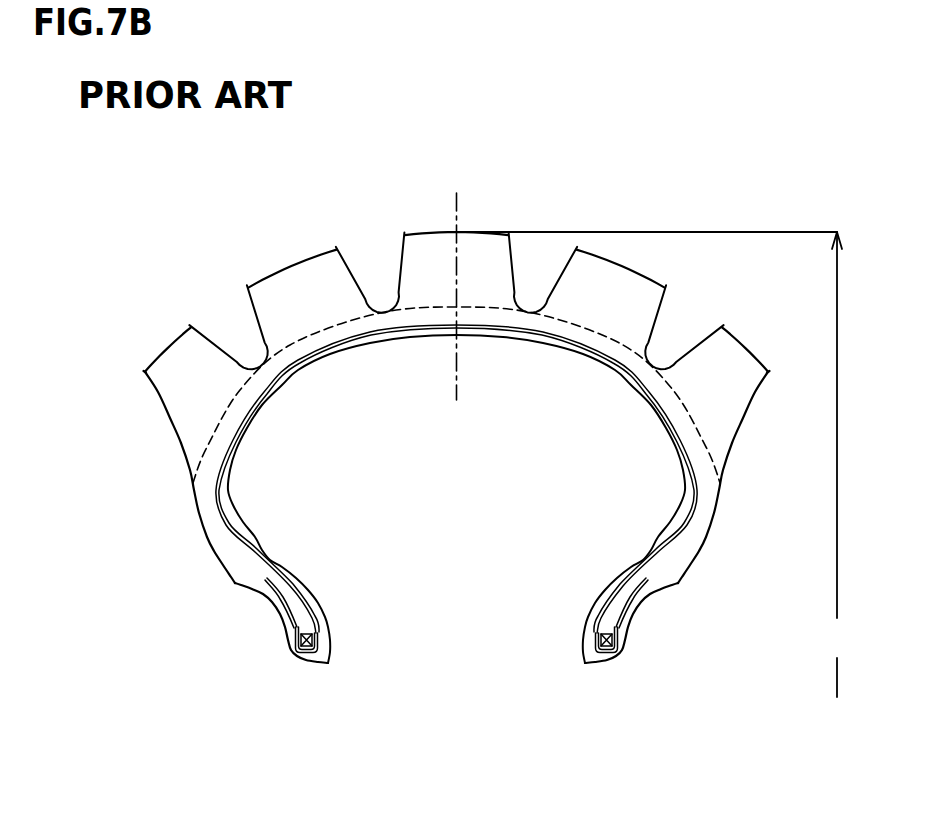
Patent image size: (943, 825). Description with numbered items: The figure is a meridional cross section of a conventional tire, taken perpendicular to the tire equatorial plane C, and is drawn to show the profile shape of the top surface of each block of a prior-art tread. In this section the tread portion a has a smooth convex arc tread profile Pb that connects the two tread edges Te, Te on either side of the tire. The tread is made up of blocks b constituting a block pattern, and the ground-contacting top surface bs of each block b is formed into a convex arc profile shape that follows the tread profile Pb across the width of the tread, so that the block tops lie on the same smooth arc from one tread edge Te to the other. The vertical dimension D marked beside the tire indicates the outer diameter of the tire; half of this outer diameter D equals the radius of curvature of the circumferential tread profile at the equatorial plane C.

The tread portion a is at (679, 204).
The block b is at (420, 262).
The ground-contacting top surface bs is at (440, 229).
The tire equatorial plane C is at (458, 214).
The tread edge Te is at (144, 372).
The tread profile Pb is at (695, 306).
The outer diameter D is at (652, 464).